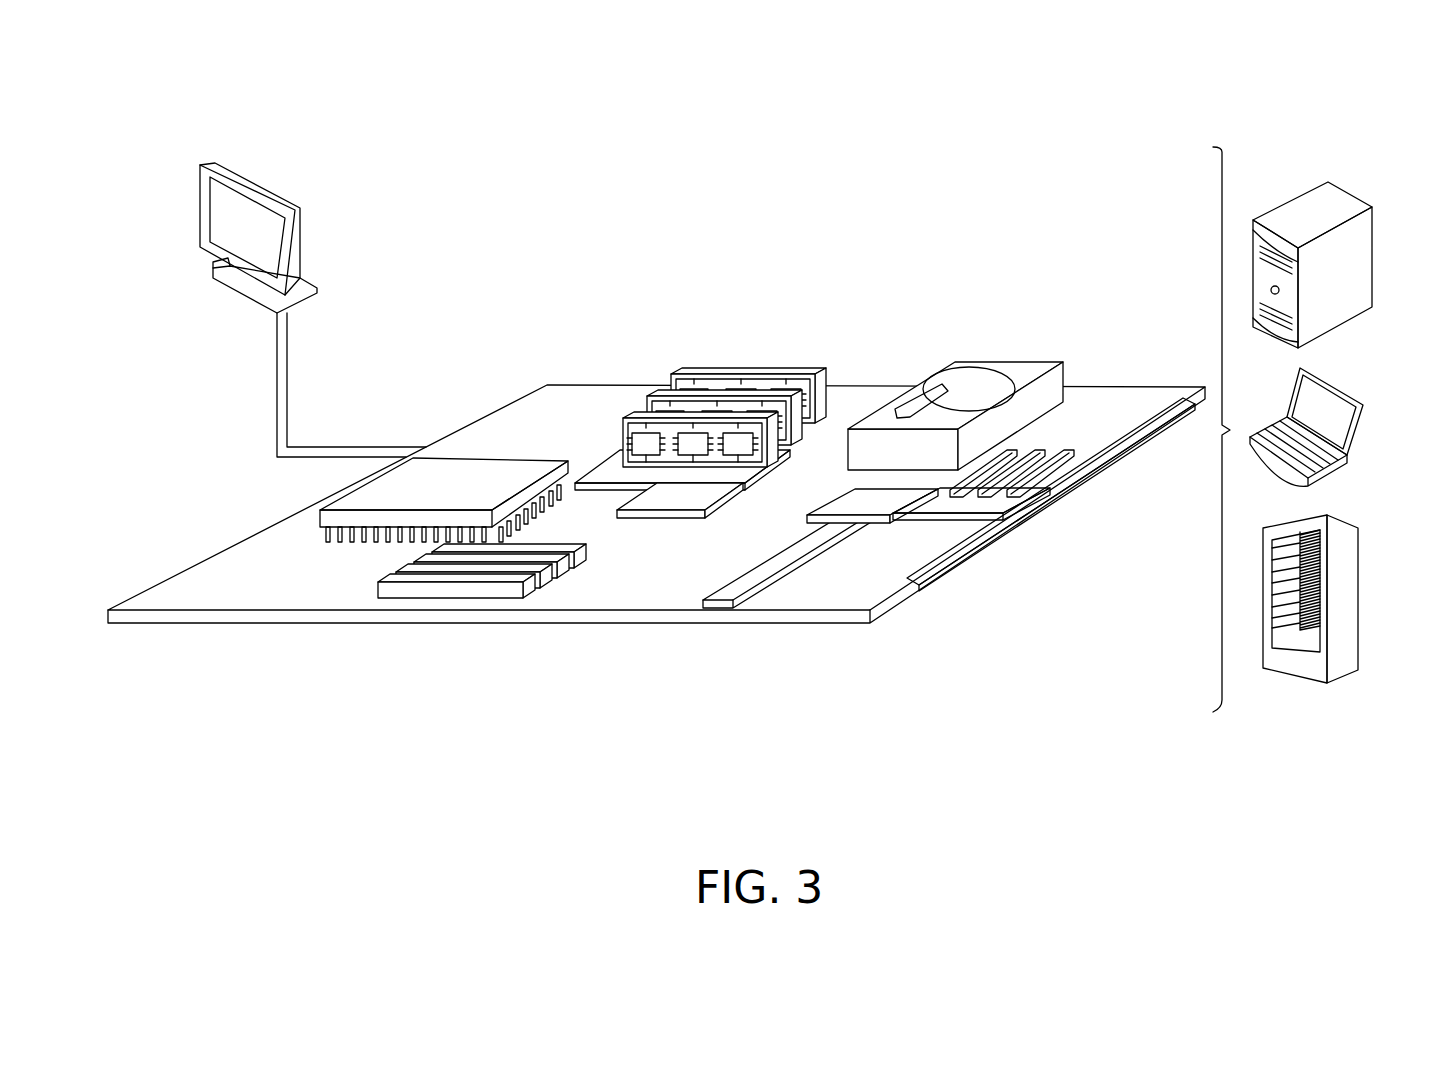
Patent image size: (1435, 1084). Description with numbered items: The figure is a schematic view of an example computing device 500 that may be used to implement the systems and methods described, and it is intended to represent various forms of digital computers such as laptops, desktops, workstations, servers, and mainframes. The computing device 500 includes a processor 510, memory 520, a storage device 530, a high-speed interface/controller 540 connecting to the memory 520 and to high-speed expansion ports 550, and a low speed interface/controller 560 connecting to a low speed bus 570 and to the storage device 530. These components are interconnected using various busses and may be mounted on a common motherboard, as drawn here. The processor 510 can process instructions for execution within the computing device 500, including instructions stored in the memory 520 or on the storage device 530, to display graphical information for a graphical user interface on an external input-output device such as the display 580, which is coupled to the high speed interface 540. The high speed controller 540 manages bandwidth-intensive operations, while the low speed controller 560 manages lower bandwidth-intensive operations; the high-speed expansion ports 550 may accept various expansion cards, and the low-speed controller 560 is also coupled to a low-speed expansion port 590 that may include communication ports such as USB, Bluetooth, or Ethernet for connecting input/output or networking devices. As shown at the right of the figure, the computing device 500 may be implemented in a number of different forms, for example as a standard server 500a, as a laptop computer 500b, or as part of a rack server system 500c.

The computing device 500 is at (1023, 145).
The standard server 500a is at (1283, 204).
The laptop computer 500b is at (1342, 388).
The rack server system 500c is at (1335, 575).
The processor 510 is at (320, 514).
The memory 520 is at (737, 373).
The storage device 530 is at (1005, 358).
The high-speed interface/controller 540 is at (683, 519).
The high-speed expansion ports 550 is at (388, 583).
The low speed interface/controller 560 is at (857, 491).
The low speed bus 570 is at (740, 612).
The display 580 is at (200, 212).
The low-speed expansion port 590 is at (1070, 448).